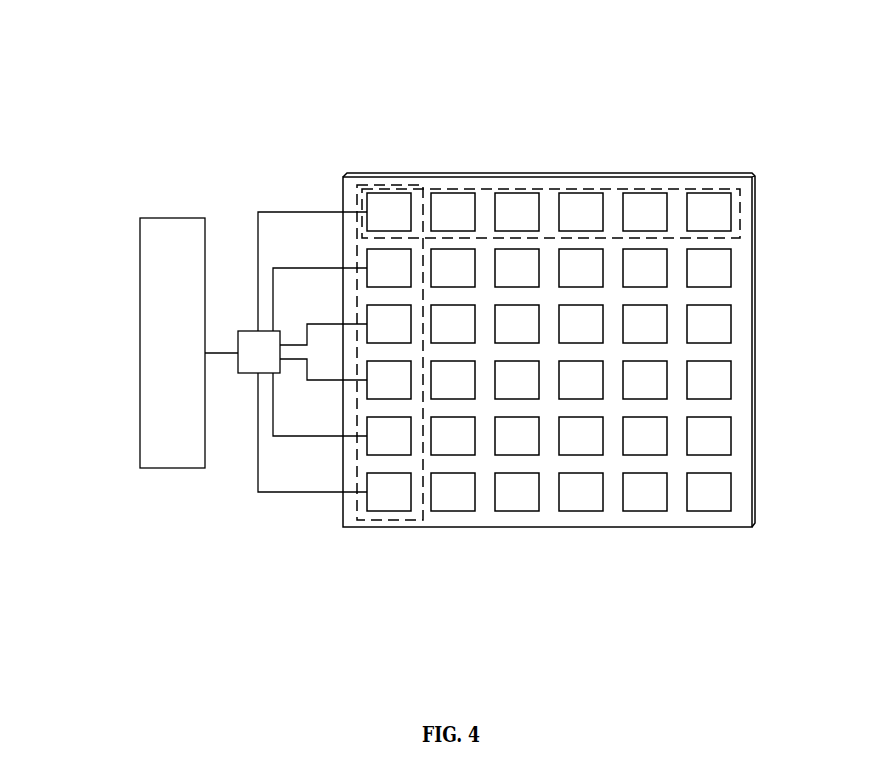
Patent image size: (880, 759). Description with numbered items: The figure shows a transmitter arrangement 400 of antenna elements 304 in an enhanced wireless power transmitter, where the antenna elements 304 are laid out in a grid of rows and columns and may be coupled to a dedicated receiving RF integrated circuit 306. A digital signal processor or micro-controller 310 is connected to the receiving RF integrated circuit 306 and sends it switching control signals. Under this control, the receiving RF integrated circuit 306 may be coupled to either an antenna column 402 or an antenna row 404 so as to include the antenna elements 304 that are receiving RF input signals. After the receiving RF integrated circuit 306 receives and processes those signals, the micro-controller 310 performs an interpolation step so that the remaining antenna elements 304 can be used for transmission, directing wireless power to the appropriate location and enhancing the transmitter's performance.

The transmitter arrangement 400 is at (183, 118).
The digital signal processor or micro-controller 310 is at (153, 468).
The receiving RF integrated circuit 306 is at (243, 331).
The antenna element 304 is at (453, 218).
The antenna column 402 is at (390, 521).
The antenna row 404 is at (679, 188).